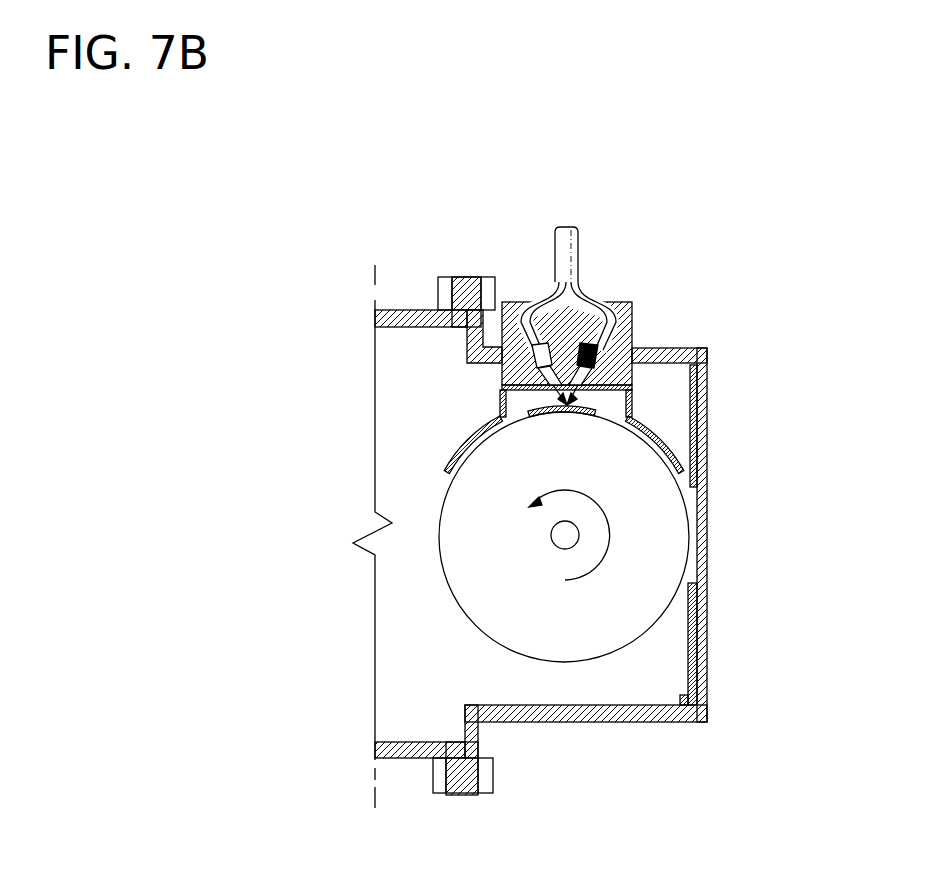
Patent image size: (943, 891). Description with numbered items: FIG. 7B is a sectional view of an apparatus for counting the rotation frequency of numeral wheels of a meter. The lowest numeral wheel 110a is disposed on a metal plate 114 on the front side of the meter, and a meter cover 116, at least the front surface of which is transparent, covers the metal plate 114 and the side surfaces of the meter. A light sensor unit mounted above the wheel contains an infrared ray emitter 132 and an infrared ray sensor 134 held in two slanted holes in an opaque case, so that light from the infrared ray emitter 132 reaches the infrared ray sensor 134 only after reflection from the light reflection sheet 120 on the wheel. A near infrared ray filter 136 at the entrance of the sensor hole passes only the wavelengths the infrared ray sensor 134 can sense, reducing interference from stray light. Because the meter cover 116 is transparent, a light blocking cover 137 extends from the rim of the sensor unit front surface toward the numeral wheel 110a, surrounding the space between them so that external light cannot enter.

The lowest numeral wheel 110a is at (467, 615).
The metal plate 114 is at (700, 680).
The meter cover 116 is at (702, 603).
The light reflection sheet 120 is at (593, 406).
The infrared ray emitter 132 is at (600, 356).
The infrared ray sensor 134 is at (590, 300).
The near infrared ray filter 136 is at (540, 383).
The light blocking cover 137 is at (465, 440).